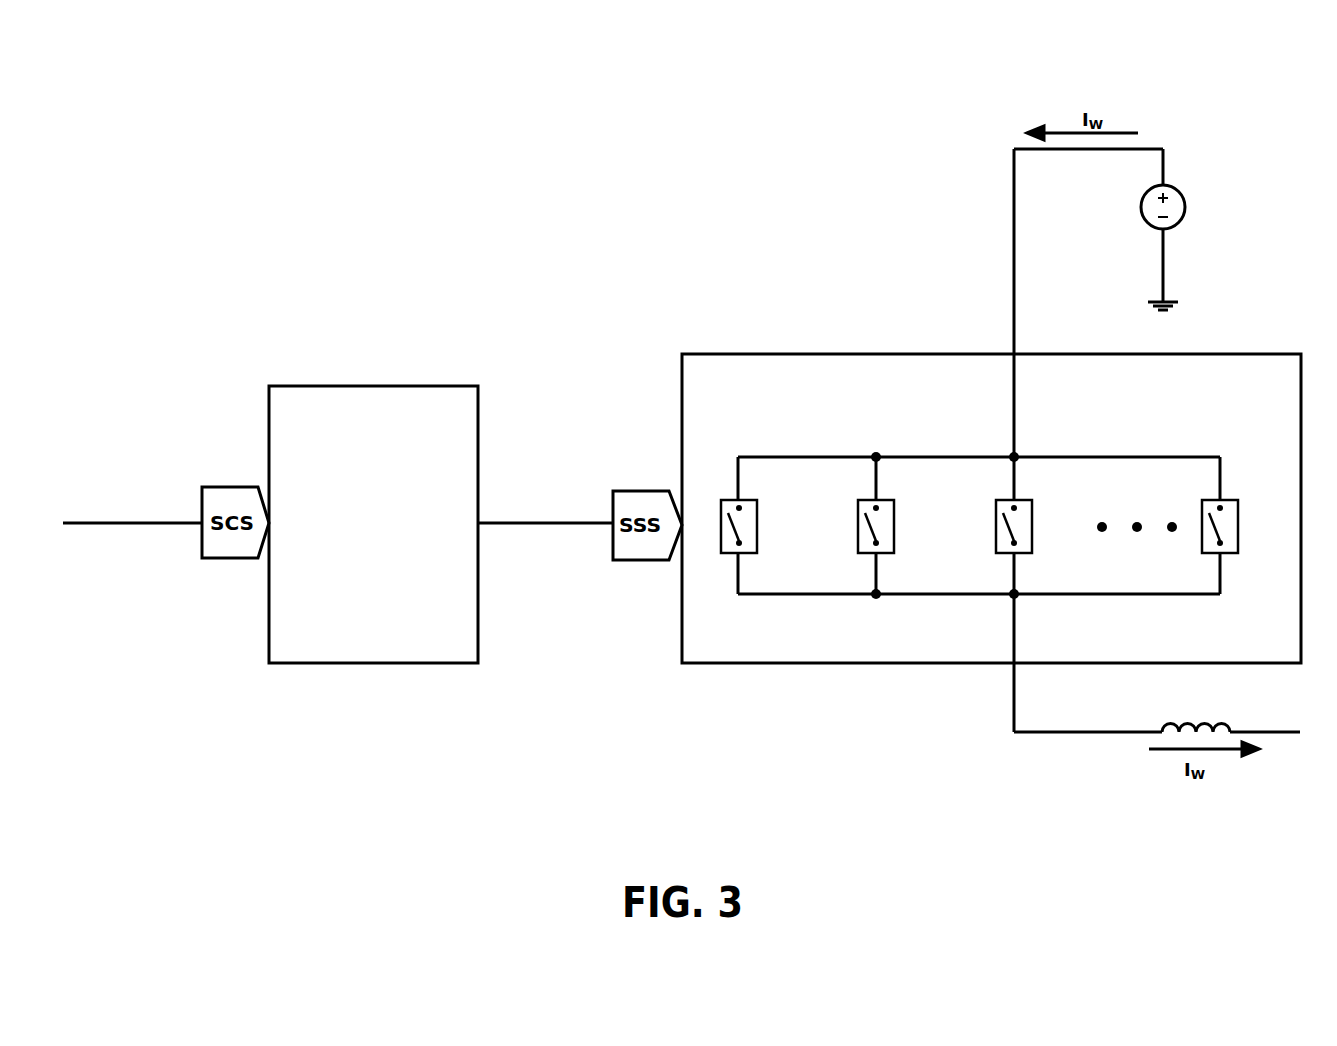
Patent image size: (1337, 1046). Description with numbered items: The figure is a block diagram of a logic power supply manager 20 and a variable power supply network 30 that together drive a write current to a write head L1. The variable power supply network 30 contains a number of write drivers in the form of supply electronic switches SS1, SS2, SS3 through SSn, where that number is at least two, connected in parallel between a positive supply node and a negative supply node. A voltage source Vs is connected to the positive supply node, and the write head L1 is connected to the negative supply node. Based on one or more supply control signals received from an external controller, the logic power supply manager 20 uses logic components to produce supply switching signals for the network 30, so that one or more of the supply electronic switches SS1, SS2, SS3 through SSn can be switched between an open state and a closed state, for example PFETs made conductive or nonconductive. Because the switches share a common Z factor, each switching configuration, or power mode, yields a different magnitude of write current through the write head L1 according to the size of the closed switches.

The logic power supply manager 20 is at (362, 588).
The variable power supply network 30 is at (791, 445).
The supply electronic switch SS1 is at (757, 531).
The supply electronic switch SS2 is at (894, 531).
The supply electronic switch SS3 is at (1032, 531).
The supply electronic switch SSn is at (1238, 531).
The voltage source Vs is at (1121, 245).
The write head L1 is at (1157, 715).